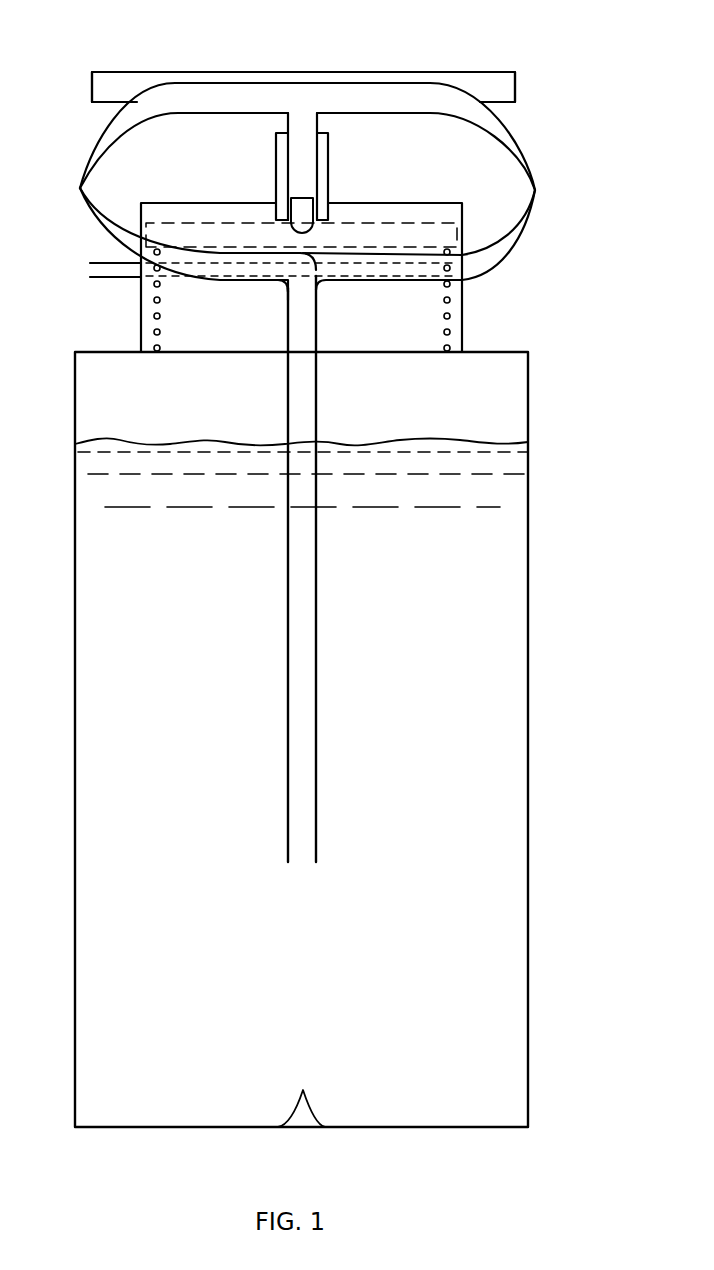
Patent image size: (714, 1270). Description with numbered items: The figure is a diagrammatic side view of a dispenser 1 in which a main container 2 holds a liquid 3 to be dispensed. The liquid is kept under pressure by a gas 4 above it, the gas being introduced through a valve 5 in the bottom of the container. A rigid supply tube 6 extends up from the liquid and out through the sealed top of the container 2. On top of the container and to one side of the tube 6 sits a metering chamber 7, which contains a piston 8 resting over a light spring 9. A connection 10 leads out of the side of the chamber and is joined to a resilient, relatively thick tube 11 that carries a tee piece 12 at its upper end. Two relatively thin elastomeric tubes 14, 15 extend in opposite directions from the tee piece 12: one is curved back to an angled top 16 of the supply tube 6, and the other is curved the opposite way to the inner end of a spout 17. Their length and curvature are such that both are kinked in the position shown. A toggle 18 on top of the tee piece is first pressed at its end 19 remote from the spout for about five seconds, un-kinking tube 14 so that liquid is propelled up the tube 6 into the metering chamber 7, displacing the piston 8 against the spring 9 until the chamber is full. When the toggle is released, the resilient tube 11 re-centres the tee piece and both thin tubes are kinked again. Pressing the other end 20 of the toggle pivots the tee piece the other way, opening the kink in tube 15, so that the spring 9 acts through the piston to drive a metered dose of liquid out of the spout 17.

The dispenser 1 is at (573, 271).
The main container 2 is at (530, 662).
The liquid 3 is at (475, 526).
The gas 4 is at (497, 398).
The valve 5 is at (304, 1118).
The rigid supply tube 6 is at (286, 716).
The metering chamber 7 is at (177, 323).
The piston 8 is at (435, 233).
The light spring 9 is at (458, 335).
The connection 10 is at (302, 200).
The resilient, relatively thick tube 11 is at (330, 172).
The tee piece 12 is at (337, 113).
The thin elastomeric tube 14 is at (98, 142).
The thin elastomeric tube 15 is at (515, 150).
The angled top 16 is at (277, 283).
The spout 17 is at (107, 263).
The toggle 18 is at (300, 72).
The toggle end remote from the spout 19 is at (462, 72).
The other end of the toggle 20 is at (136, 72).